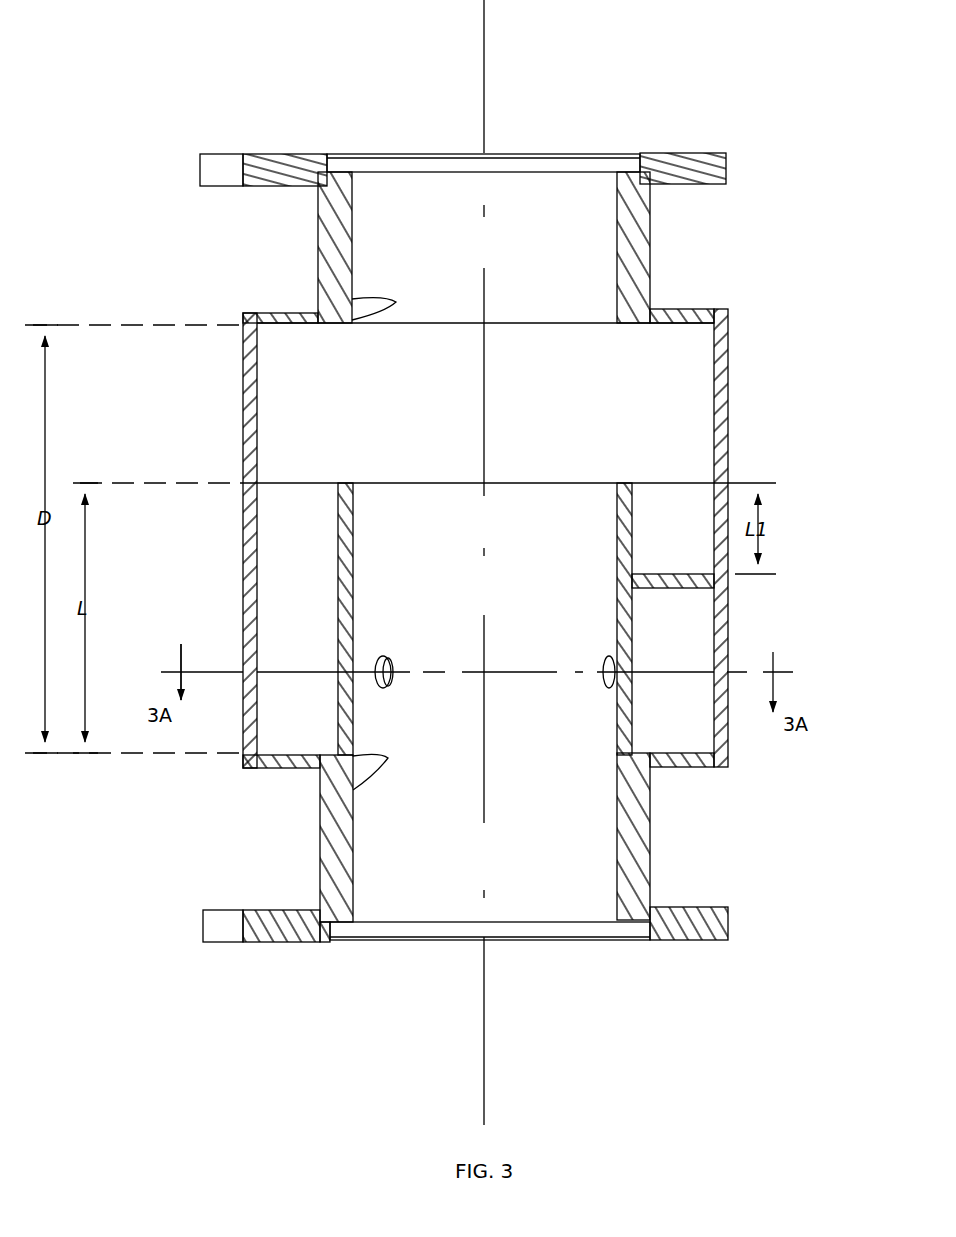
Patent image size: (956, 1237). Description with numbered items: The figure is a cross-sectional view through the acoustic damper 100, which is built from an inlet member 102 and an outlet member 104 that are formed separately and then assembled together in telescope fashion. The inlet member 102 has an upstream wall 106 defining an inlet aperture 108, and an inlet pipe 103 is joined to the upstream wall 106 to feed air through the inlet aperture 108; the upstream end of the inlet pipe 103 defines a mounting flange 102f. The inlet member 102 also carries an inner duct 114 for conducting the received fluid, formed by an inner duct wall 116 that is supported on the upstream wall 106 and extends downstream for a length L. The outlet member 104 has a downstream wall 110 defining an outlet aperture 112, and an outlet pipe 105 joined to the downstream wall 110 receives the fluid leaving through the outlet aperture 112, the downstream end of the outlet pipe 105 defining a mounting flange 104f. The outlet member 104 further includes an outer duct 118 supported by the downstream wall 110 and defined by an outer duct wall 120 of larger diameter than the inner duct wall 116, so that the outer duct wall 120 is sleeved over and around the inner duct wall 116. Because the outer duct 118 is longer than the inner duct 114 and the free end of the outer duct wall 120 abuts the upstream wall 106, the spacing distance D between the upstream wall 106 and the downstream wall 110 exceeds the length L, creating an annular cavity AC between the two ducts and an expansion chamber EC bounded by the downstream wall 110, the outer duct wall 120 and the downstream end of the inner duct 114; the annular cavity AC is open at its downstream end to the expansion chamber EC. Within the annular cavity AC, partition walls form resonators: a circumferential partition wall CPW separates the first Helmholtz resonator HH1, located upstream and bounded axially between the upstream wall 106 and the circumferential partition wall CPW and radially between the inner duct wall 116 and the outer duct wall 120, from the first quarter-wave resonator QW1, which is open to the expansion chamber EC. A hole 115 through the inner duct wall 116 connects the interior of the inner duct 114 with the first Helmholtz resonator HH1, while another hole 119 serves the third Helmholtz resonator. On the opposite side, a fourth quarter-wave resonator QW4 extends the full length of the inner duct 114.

The acoustic damper 100 is at (280, 114).
The inlet member 102 is at (448, 939).
The mounting flange 102f is at (688, 920).
The inlet pipe 103 is at (448, 862).
The outlet member 104 is at (477, 223).
The mounting flange 104f is at (692, 153).
The outlet pipe 105 is at (638, 227).
The upstream wall 106 is at (680, 760).
The inlet aperture 108 is at (353, 791).
The downstream wall 110 is at (673, 308).
The outlet aperture 112 is at (352, 300).
The inner duct 114 is at (358, 505).
The hole 115 is at (604, 660).
The inner duct wall 116 is at (617, 535).
The outer duct 118 is at (547, 550).
The hole 119 is at (388, 660).
The outer duct wall 120 is at (258, 380).
The expansion chamber EC is at (240, 326).
The annular cavity AC is at (280, 572).
The circumferential partition wall CPW is at (664, 588).
The first quarter-wave resonator QW1 is at (650, 500).
The fourth quarter-wave resonator QW4 is at (298, 540).
The first Helmholtz resonator HH1 is at (690, 720).